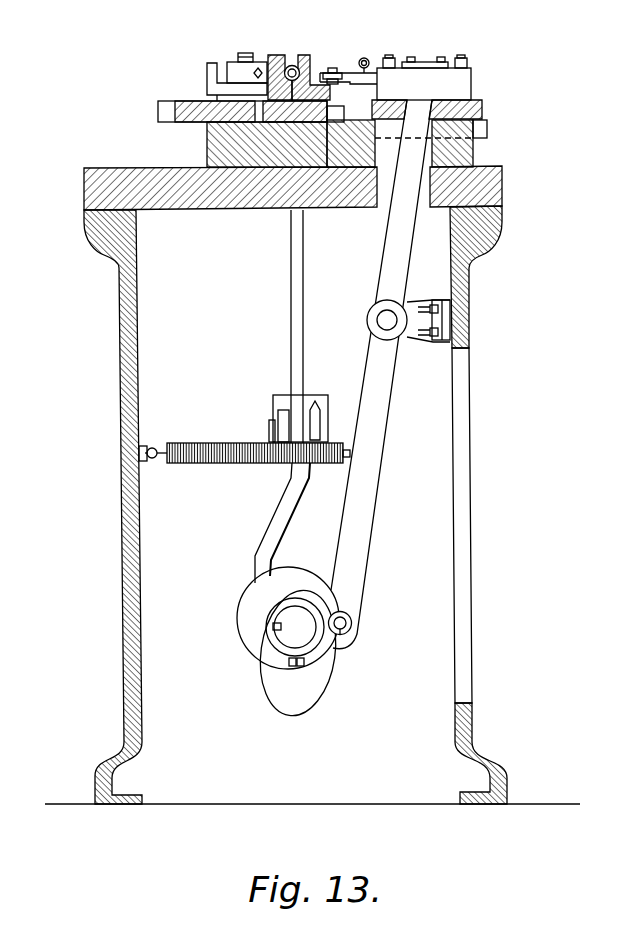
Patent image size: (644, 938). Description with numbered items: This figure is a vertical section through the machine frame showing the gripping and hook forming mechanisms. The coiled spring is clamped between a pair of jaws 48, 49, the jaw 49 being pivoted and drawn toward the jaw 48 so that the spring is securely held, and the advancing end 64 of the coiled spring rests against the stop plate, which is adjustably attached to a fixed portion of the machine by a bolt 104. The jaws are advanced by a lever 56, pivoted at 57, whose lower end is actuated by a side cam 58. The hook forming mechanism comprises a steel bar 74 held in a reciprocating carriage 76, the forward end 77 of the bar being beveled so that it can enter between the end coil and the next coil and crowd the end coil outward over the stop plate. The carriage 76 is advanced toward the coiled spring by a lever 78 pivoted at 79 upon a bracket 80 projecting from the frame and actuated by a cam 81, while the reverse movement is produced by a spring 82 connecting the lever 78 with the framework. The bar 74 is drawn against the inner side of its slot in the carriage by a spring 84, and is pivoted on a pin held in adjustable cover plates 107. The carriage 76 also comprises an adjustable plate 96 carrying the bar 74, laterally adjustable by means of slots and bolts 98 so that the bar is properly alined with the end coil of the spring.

The jaw 48 is at (310, 52).
The jaw 49 is at (272, 62).
The lever 56 is at (292, 326).
The pivot 57 is at (272, 426).
The side cam 58 is at (257, 592).
The advancing end of the coiled spring 64 is at (292, 65).
The steel bar 74 is at (343, 73).
The reciprocating carriage 76 is at (482, 104).
The forward end 77 is at (334, 68).
The lever 78 is at (393, 258).
The pivot 79 is at (383, 317).
The bracket 80 is at (418, 327).
The cam 81 is at (320, 674).
The spring 82 is at (229, 445).
The spring 84 is at (366, 58).
The adjustable plate 96 is at (462, 80).
The bolts 98 is at (389, 57).
The bolt 104 is at (245, 54).
The cover plates 107 is at (422, 63).